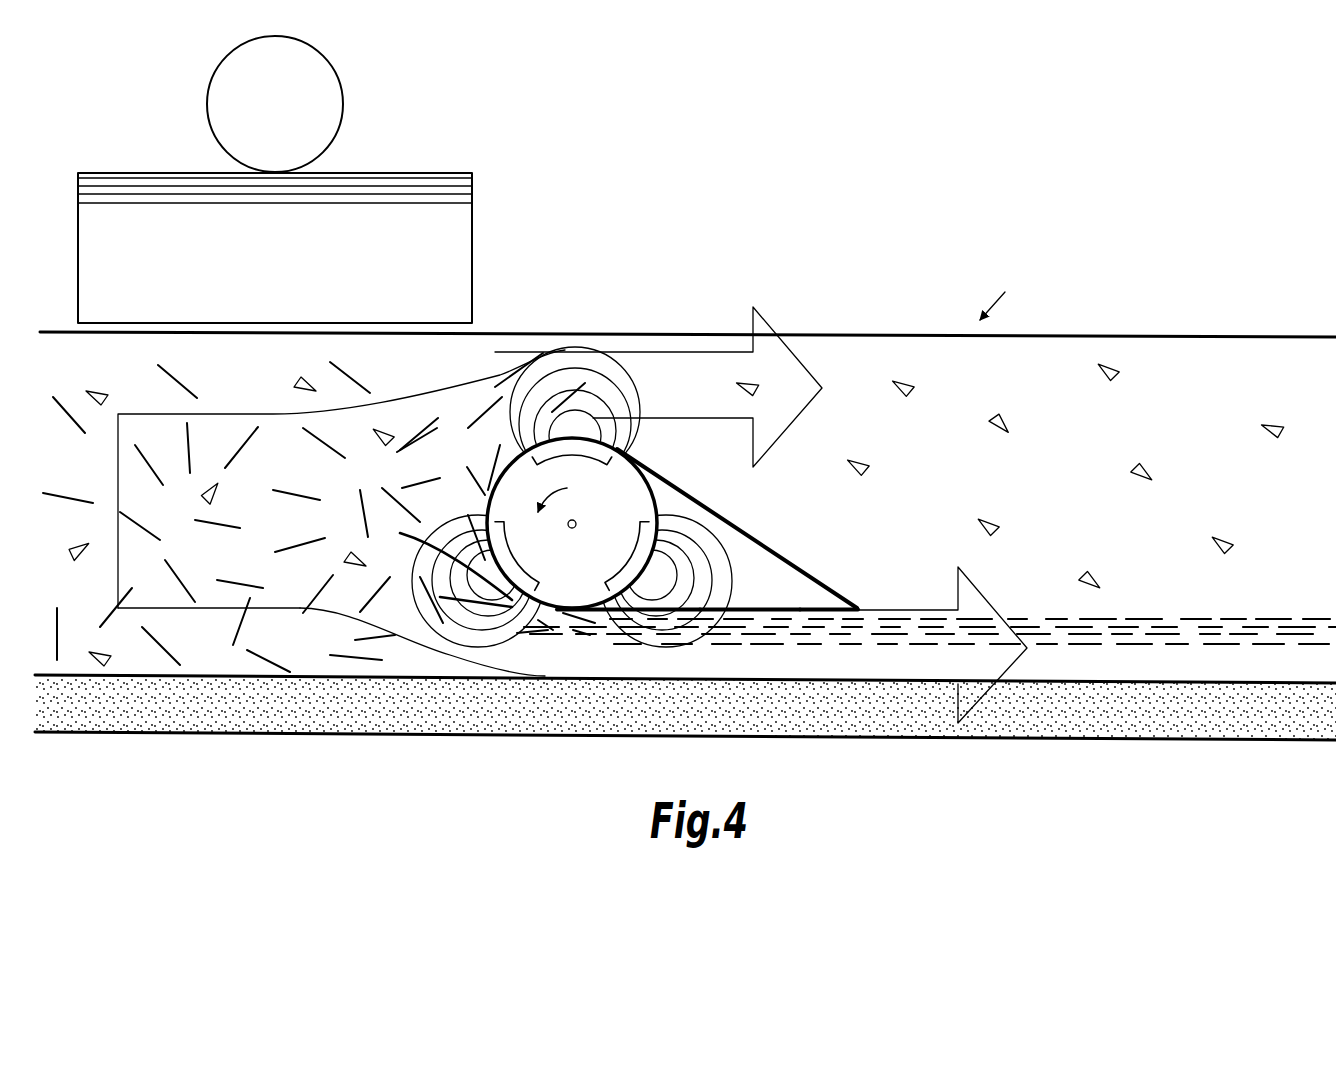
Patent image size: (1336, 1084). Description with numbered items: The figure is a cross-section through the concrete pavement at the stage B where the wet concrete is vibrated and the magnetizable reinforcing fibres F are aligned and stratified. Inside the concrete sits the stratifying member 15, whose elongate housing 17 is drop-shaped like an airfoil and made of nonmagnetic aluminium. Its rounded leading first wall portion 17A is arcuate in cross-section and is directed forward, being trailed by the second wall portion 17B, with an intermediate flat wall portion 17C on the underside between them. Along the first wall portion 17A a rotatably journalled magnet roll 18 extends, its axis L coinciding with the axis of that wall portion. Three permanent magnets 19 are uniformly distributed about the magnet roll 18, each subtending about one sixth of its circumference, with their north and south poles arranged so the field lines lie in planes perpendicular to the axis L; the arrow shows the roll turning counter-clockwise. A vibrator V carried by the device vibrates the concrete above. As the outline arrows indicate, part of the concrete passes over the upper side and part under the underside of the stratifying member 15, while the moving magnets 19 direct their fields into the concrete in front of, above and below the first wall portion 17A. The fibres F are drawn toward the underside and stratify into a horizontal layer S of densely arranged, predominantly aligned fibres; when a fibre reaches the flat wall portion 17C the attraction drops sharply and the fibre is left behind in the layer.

The stratifying member 15 is at (721, 563).
The housing 17 is at (721, 563).
The first wall portion 17A is at (552, 623).
The second wall portion 17B is at (858, 609).
The intermediate flat wall portion 17C is at (745, 617).
The magnet roll 18 is at (656, 497).
The permanent magnets 19 is at (641, 397).
The vibrator V is at (462, 233).
The vibrating and stratifying step B is at (1001, 292).
The fibres F is at (428, 427).
The horizontal layer S is at (1148, 640).
The axis L is at (576, 527).